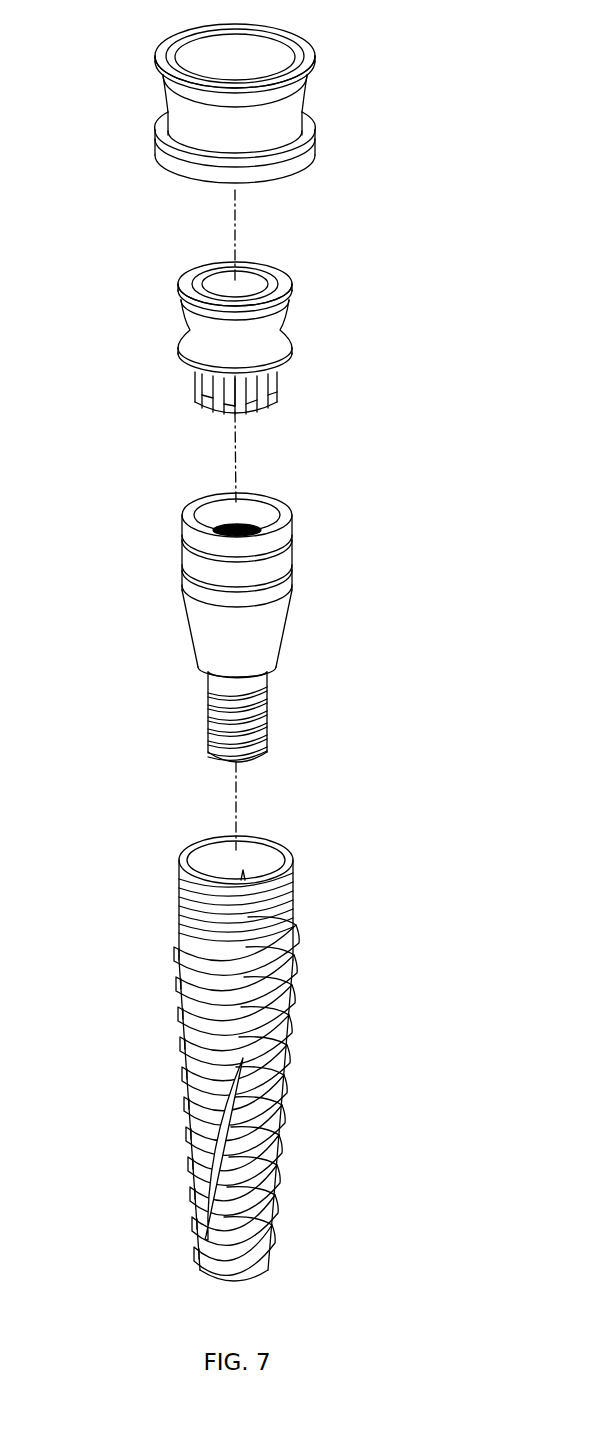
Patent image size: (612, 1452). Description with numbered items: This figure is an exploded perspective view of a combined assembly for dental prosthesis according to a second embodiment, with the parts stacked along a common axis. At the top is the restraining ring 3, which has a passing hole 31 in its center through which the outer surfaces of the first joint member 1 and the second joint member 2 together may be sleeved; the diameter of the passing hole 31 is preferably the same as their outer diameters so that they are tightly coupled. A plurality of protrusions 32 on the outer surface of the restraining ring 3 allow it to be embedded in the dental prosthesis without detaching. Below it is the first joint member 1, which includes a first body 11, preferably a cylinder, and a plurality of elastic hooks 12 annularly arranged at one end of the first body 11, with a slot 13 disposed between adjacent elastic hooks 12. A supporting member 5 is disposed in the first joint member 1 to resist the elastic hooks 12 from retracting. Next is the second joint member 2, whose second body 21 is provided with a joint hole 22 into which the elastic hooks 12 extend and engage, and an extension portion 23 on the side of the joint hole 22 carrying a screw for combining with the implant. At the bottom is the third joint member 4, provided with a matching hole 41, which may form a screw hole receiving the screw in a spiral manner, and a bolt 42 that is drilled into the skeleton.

The first joint member 1 is at (307, 270).
The second joint member 2 is at (308, 515).
The restraining ring 3 is at (342, 46).
The third joint member 4 is at (306, 842).
The supporting member 5 is at (253, 278).
The first body 11 is at (152, 267).
The elastic hooks 12 is at (258, 408).
The slot 13 is at (227, 408).
The second body 21 is at (160, 507).
The joint hole 22 is at (205, 517).
The extension portion 23 is at (160, 610).
The passing hole 31 is at (207, 62).
The protrusions 32 is at (310, 72).
The matching hole 41 is at (203, 853).
The bolt 42 is at (185, 1060).